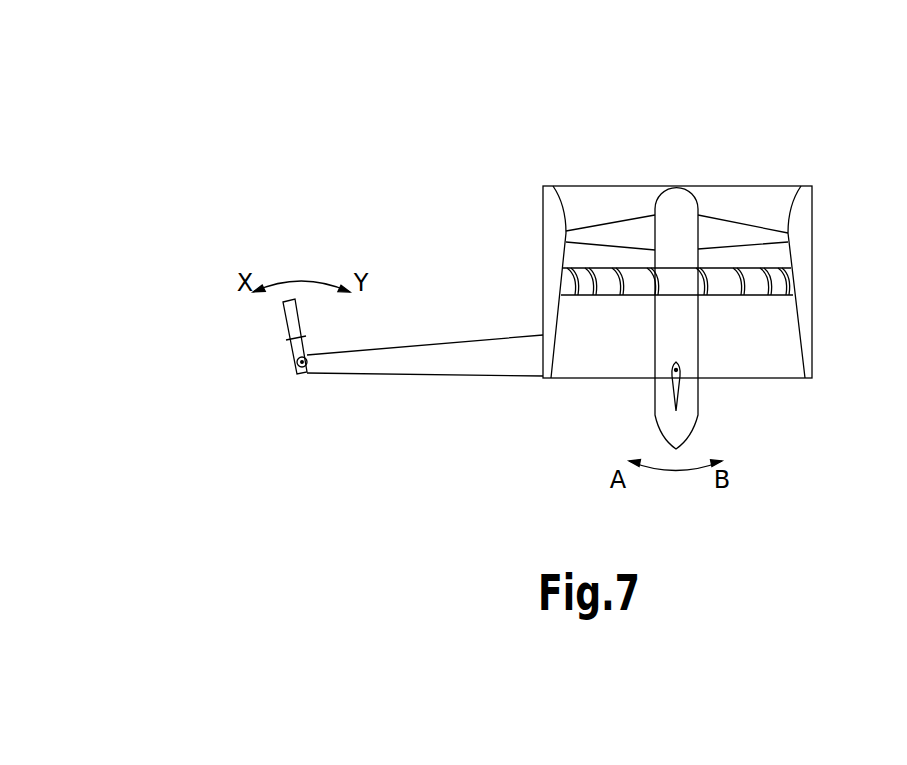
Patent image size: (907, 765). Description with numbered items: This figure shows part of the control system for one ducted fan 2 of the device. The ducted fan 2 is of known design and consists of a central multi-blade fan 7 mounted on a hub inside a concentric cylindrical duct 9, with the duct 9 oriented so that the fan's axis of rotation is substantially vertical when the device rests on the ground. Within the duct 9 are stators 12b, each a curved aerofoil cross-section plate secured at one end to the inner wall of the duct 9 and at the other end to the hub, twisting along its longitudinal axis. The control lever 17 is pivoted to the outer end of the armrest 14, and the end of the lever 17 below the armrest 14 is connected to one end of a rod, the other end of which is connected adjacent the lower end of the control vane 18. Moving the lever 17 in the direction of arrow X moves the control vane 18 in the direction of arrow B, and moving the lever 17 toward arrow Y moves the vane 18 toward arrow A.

The ducted fan 2 is at (685, 124).
The multi-blade fan 7 is at (753, 231).
The cylindrical duct 9 is at (549, 206).
The stator 12b is at (768, 297).
The armrest 14 is at (417, 343).
The control lever 17 is at (282, 318).
The control vane 18 is at (681, 393).